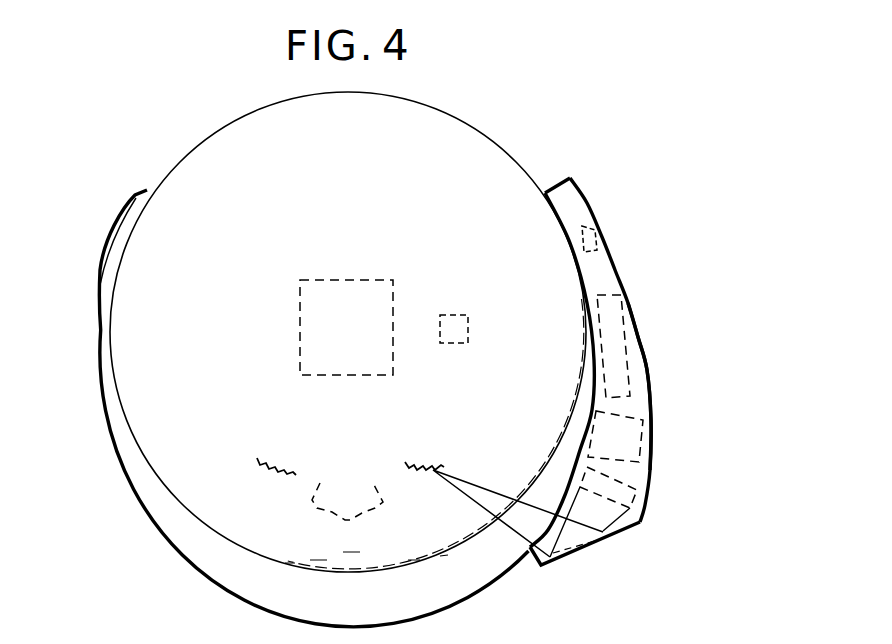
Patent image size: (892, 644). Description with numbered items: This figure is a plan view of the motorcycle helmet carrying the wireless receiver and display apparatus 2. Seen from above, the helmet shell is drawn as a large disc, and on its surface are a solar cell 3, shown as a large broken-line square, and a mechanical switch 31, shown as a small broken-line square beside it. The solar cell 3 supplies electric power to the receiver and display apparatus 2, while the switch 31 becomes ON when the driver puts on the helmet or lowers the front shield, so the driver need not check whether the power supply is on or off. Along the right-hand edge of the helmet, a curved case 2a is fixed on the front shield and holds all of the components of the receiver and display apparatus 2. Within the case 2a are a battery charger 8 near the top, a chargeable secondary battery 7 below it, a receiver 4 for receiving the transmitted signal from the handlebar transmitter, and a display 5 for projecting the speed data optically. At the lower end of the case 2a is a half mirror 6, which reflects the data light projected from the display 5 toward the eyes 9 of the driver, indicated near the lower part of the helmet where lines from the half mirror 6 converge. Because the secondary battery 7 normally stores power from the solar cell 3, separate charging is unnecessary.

The wireless receiver and display apparatus 2 is at (588, 203).
The case 2a is at (633, 391).
The solar cell 3 is at (377, 280).
The mechanical switch 31 is at (468, 315).
The receiver 4 is at (641, 450).
The display 5 is at (640, 498).
The half mirror 6 is at (598, 543).
The chargeable secondary battery 7 is at (627, 347).
The battery charger 8 is at (600, 236).
The eyes 9 is at (436, 474).